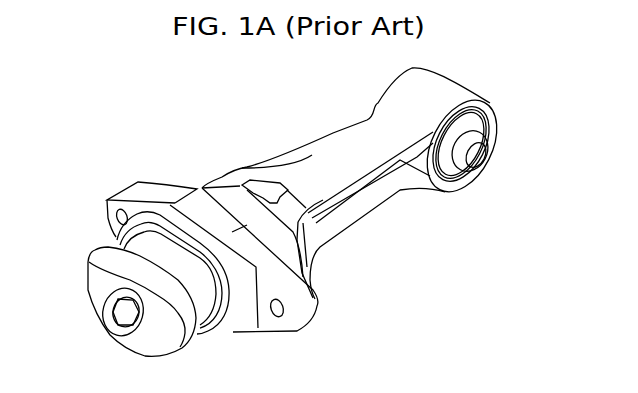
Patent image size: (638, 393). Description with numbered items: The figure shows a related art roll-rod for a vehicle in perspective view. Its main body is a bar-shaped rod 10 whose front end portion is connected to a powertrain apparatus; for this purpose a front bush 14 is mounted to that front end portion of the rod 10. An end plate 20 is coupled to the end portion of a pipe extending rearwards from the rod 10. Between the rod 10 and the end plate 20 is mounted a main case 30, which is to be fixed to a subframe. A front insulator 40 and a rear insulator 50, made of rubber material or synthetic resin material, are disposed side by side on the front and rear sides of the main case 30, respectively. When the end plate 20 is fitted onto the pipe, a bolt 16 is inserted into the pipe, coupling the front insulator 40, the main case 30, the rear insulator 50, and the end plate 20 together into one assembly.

The rod 10 is at (334, 153).
The front bush 14 is at (490, 121).
The bolt 16 is at (124, 312).
The end plate 20 is at (97, 276).
The main case 30 is at (308, 297).
The front insulator 40 is at (220, 178).
The rear insulator 50 is at (110, 231).